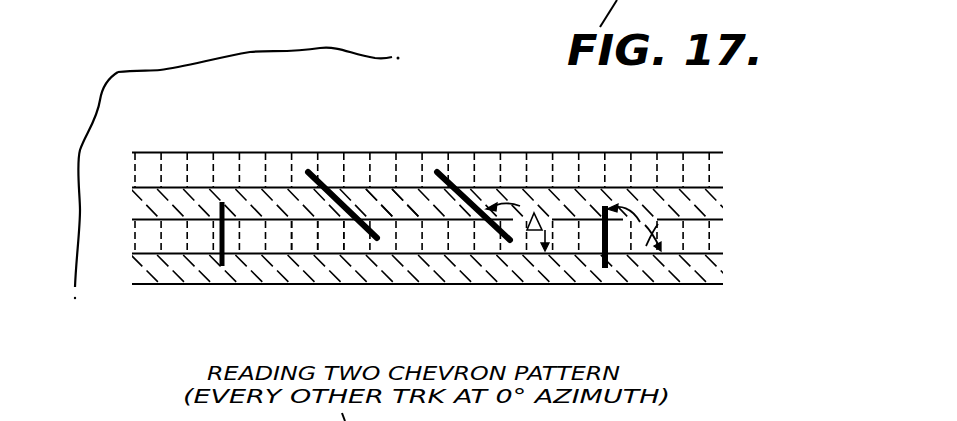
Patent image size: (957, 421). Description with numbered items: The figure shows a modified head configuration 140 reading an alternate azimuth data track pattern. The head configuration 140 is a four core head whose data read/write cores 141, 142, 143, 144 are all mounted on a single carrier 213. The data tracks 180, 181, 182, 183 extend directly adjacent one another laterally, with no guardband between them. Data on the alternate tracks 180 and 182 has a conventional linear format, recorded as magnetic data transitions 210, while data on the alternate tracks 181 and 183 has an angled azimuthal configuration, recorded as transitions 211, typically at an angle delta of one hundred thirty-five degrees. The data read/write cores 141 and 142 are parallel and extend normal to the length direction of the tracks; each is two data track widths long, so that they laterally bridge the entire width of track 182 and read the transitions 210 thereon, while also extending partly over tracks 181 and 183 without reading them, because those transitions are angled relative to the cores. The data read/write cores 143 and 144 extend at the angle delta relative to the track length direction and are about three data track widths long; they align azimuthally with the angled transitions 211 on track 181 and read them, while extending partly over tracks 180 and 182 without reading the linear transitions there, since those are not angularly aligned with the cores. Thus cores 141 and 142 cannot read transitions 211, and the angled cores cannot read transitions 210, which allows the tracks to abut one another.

The carrier 213 is at (120, 80).
The head configuration 140 is at (471, 189).
The data read/write core 144 is at (308, 172).
The magnetic data transitions 211 is at (403, 190).
The data read/write core 143 is at (440, 172).
The data track 180 is at (698, 163).
The data track 181 is at (718, 188).
The data track 182 is at (720, 238).
The data track 183 is at (722, 264).
The data read/write core 142 is at (222, 232).
The magnetic data transitions 210 is at (330, 244).
The data read/write core 141 is at (605, 266).